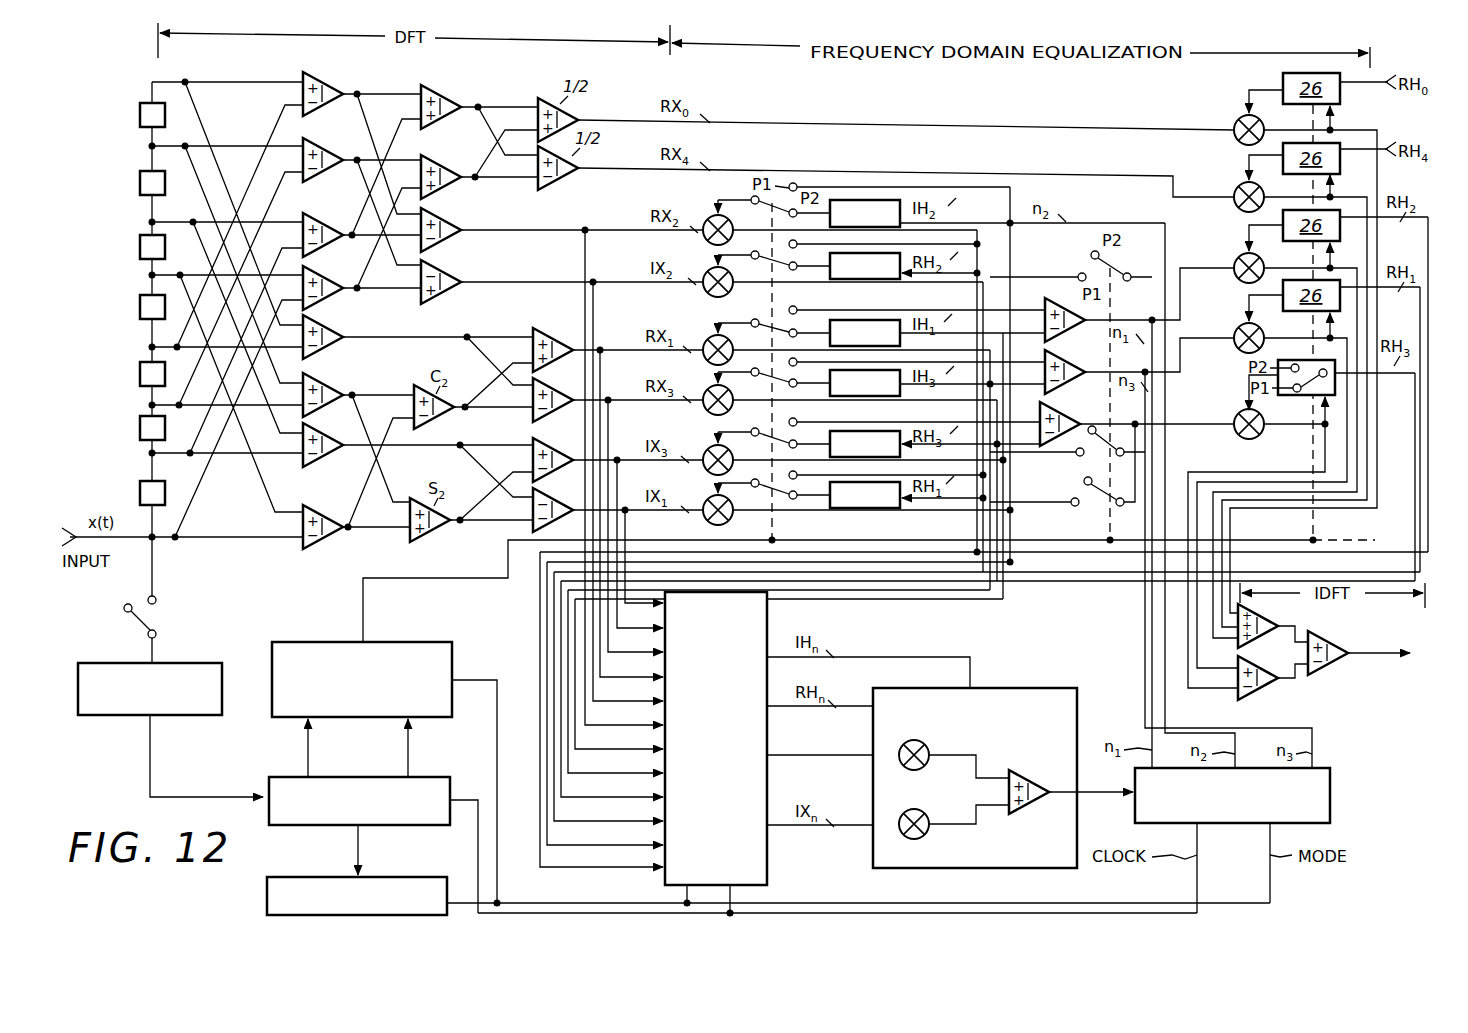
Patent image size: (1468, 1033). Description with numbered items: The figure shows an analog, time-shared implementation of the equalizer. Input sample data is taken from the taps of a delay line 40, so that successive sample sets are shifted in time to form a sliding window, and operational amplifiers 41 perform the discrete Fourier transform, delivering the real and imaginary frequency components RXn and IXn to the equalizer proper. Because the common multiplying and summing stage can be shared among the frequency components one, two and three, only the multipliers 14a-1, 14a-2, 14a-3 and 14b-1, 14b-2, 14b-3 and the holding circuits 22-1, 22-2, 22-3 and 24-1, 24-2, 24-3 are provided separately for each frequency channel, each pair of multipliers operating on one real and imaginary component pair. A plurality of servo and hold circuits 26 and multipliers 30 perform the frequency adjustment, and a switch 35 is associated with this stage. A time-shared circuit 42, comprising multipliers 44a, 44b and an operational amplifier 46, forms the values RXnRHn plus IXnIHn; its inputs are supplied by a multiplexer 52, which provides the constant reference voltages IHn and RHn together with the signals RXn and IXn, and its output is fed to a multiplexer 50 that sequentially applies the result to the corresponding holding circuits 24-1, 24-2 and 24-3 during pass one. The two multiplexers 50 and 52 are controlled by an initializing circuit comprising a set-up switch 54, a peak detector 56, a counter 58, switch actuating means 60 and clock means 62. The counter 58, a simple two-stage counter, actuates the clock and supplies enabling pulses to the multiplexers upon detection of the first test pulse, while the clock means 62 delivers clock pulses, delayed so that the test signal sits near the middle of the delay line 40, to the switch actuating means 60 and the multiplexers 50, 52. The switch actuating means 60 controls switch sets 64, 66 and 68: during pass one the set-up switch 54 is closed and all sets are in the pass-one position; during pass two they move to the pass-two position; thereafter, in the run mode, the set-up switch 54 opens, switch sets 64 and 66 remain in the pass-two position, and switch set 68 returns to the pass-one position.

The delay line 40 is at (138, 481).
The operational amplifiers 41 is at (345, 310).
The multiplier 14a-2 is at (708, 214).
The multiplier 14b-2 is at (708, 266).
The multiplier 14a-1 is at (708, 334).
The multiplier 14a-3 is at (708, 385).
The multiplier 14b-3 is at (708, 444).
The multiplier 14b-1 is at (708, 496).
The holding circuit 24-2 is at (997, 213).
The holding circuit 22-2 is at (903, 266).
The holding circuit 24-1 is at (937, 333).
The holding circuit 24-3 is at (937, 383).
The holding circuit 22-3 is at (935, 444).
The holding circuit 22-1 is at (906, 495).
The servo and hold circuits 26 is at (1302, 395).
The multipliers 30 is at (1236, 140).
The switch 35 is at (1302, 360).
The switch set 64 is at (778, 530).
The switch set 66 is at (1100, 536).
The switch set 68 is at (1318, 540).
The set-up switch 54 is at (150, 616).
The peak detector 56 is at (190, 663).
The switch actuating means 60 is at (310, 642).
The counter 58 is at (364, 777).
The clock means 62 is at (267, 896).
The multiplexer 52 is at (770, 606).
The time-shared circuit 42 is at (1003, 759).
The multiplier 44a is at (918, 840).
The multiplier 44b is at (926, 742).
The operational amplifier 46 is at (1028, 772).
The multiplexer 50 is at (1332, 800).